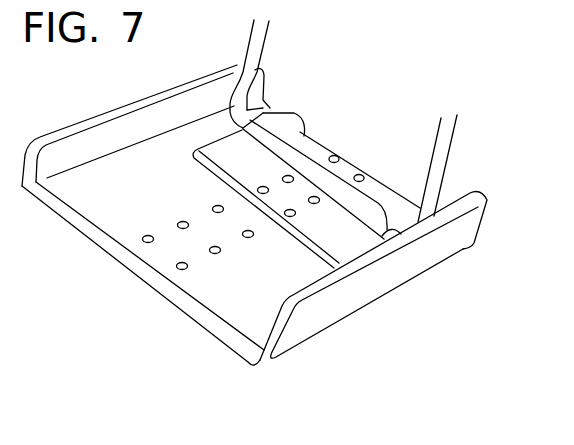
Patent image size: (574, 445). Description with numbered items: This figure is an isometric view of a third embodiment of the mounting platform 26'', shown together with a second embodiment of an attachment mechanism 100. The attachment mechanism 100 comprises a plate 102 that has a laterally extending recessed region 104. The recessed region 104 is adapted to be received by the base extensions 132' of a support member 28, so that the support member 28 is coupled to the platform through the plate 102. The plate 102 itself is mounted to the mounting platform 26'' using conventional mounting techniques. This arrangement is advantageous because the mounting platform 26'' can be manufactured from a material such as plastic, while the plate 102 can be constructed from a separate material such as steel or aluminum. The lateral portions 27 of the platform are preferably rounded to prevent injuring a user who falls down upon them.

The mounting platform 26'' is at (171, 271).
The lateral portions 27 is at (90, 122).
The support member 28 is at (246, 52).
The base extensions 132' is at (301, 89).
The recessed region 104 is at (281, 142).
The attachment mechanism 100 is at (339, 141).
The plate 102 is at (350, 166).